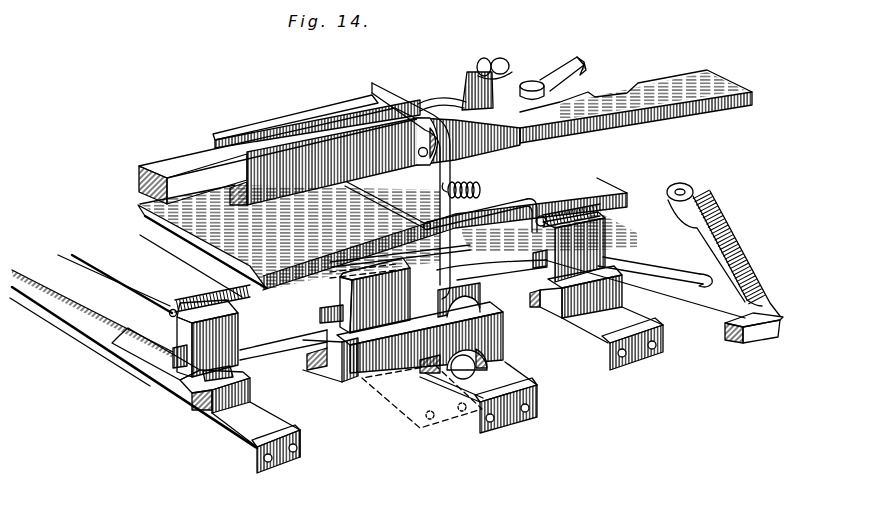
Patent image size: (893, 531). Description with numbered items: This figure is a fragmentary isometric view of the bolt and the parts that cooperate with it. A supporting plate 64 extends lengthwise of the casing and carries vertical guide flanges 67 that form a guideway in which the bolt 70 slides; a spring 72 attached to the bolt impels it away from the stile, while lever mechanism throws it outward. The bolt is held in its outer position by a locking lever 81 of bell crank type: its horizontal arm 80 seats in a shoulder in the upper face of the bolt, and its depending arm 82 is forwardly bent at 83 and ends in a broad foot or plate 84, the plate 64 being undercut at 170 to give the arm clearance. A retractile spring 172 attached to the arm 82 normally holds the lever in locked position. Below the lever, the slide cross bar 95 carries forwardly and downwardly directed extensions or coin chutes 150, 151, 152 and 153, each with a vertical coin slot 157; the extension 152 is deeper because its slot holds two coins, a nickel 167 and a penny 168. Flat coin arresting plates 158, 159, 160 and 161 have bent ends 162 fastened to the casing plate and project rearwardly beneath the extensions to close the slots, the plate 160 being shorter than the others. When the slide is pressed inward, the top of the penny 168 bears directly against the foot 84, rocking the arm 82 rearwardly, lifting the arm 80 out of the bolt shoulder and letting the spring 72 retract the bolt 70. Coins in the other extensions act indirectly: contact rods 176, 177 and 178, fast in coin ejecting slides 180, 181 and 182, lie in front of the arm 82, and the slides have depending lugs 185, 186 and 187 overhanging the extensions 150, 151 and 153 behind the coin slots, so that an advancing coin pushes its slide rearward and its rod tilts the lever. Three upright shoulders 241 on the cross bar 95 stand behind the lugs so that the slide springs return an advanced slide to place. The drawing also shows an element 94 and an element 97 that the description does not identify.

The supporting plate 64 is at (643, 105).
The vertical guide flanges 67 is at (298, 121).
The bolt 70 is at (178, 158).
The spring 72 is at (512, 68).
The horizontal arm 80 is at (378, 98).
The locking lever 81 is at (438, 103).
The depending arm 82 is at (378, 201).
The forward bend 83 is at (453, 280).
The foot or plate 84 is at (487, 270).
The base frame rail 94 is at (57, 314).
The slide cross bar 95 is at (733, 340).
The curved arm 97 is at (693, 184).
The coin chute extension 150 is at (213, 423).
The coin chute extension 151 is at (345, 366).
The coin chute extension 152 is at (510, 363).
The coin chute extension 153 is at (615, 297).
The vertical coin slot 157 is at (182, 405).
The coin arresting plate 158 is at (253, 444).
The coin arresting plate 159 is at (398, 392).
The coin arresting plate 160 is at (522, 383).
The coin arresting plate 161 is at (643, 325).
The bent ends 162 is at (273, 473).
The nickel 167 is at (462, 367).
The penny 168 is at (473, 310).
The undercut 170 is at (385, 193).
The retractile spring 172 is at (485, 190).
The contact rod 176 is at (233, 288).
The contact rod 177 is at (410, 264).
The contact rod 178 is at (423, 223).
The coin ejecting slide 180 is at (147, 309).
The coin ejecting slide 181 is at (187, 247).
The coin ejecting slide 182 is at (573, 177).
The depending lug 185 is at (147, 387).
The depending lug 186 is at (247, 303).
The depending lug 187 is at (600, 237).
The upright shoulders 241 is at (170, 352).